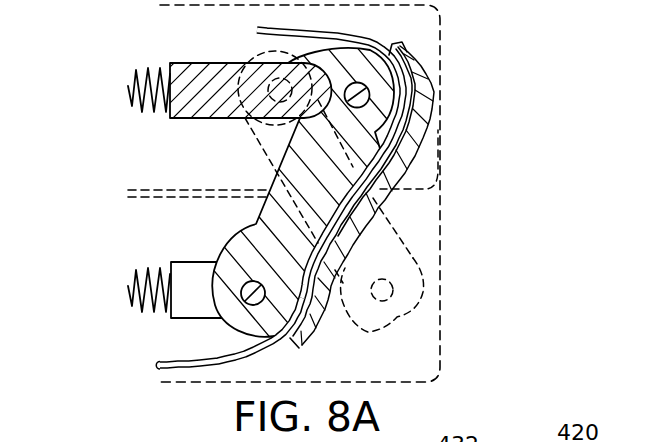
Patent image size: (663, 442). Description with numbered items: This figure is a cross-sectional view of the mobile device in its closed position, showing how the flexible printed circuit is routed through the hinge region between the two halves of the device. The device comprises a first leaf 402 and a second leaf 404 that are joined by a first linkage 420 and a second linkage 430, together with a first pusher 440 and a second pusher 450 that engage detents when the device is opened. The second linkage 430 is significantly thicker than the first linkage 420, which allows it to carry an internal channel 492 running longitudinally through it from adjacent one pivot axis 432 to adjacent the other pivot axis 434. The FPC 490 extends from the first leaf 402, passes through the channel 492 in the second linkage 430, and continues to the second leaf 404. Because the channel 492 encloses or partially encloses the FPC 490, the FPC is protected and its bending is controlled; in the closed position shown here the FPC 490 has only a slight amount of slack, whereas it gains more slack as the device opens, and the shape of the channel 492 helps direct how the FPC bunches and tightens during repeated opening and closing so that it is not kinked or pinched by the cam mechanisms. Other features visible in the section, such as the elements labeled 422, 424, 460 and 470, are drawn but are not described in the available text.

The first leaf 402 is at (484, 163).
The second leaf 404 is at (474, 341).
The first linkage 420 is at (425, 264).
The pivot in alternate position (phantom) 422 is at (400, 316).
The pivot aperture 424 is at (268, 86).
The second linkage 430 is at (388, 163).
The pivot axis 432 is at (368, 90).
The pivot axis 434 is at (248, 288).
The first pusher 440 is at (190, 266).
The second pusher 450 is at (191, 68).
The lower spring 460 is at (133, 280).
The upper spring 470 is at (128, 86).
The FPC 490 is at (203, 361).
The internal channel 492 is at (405, 114).